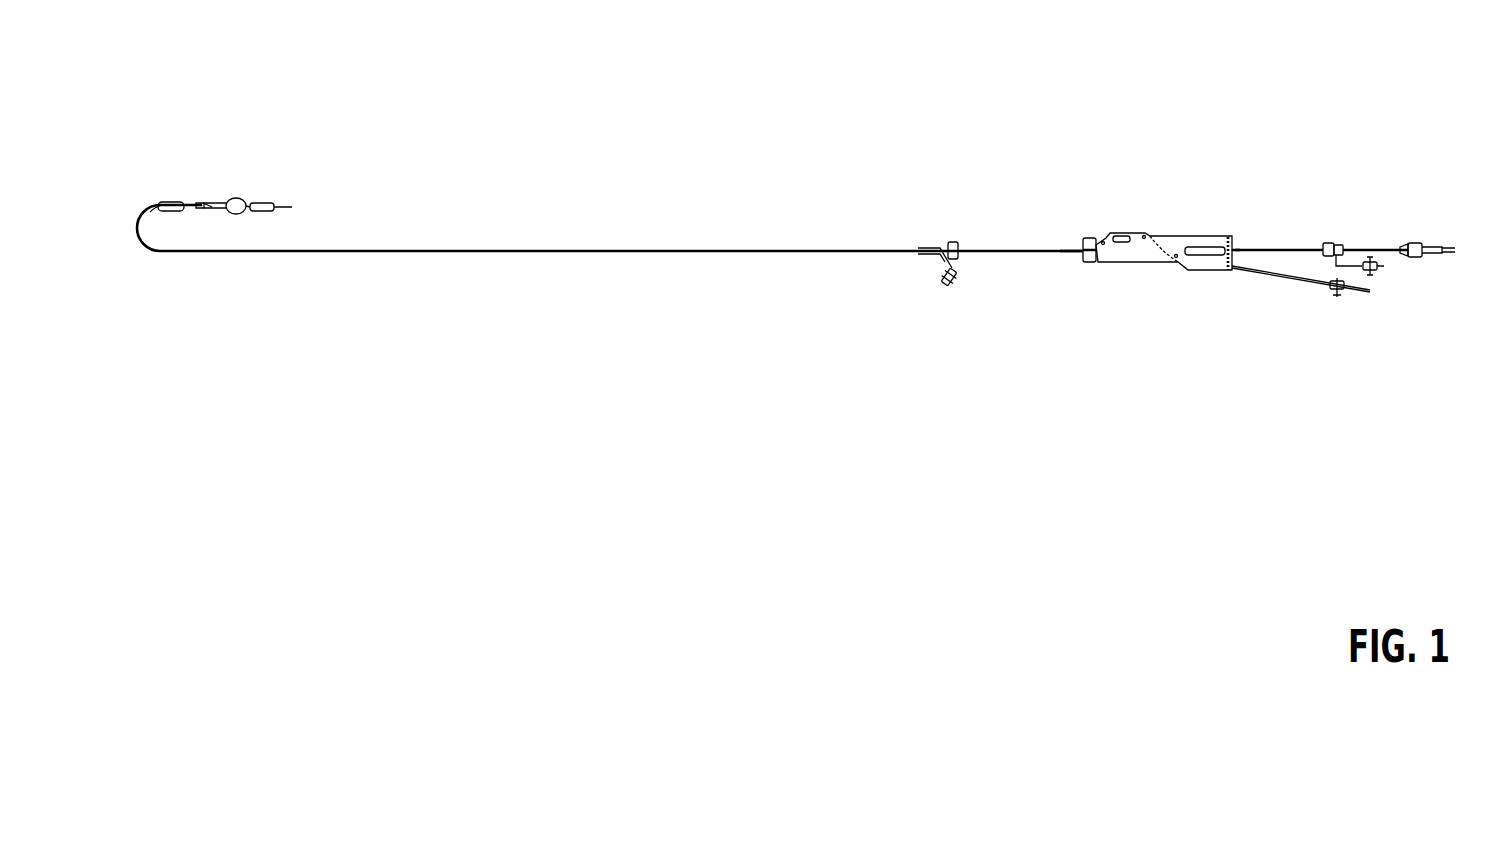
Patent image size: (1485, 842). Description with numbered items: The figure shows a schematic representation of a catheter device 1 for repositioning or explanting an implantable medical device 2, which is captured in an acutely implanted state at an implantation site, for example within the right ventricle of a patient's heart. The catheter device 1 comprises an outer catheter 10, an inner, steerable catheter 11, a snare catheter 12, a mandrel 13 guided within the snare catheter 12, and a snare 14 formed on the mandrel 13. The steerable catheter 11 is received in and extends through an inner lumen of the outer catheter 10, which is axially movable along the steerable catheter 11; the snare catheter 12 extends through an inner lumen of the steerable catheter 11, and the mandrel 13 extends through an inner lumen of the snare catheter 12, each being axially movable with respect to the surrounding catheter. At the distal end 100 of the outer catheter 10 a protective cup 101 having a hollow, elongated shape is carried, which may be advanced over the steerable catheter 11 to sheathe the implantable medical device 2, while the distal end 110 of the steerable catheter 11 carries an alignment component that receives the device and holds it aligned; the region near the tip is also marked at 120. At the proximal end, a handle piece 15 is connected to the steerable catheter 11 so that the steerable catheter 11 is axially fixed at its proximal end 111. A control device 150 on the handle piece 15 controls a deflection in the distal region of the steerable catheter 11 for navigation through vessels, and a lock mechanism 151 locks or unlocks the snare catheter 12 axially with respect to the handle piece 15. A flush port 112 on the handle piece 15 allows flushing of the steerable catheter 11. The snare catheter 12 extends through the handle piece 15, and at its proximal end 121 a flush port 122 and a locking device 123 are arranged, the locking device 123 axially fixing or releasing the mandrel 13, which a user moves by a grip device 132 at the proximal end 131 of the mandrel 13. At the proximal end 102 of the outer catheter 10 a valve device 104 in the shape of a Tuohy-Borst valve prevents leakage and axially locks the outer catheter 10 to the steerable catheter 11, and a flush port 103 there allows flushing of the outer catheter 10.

The catheter device 1 is at (840, 118).
The implantable medical device 2 is at (278, 208).
The outer catheter 10 is at (566, 253).
The steerable catheter 11 is at (197, 205).
The snare catheter 12 is at (213, 205).
The mandrel 13 is at (224, 203).
The snare 14 is at (248, 201).
The handle piece 15 is at (1169, 219).
The distal end of the outer catheter 100 is at (144, 214).
The protective cup 101 is at (167, 203).
The proximal end of the outer catheter 102 is at (916, 255).
The flush port 103 is at (950, 286).
The valve device 104 is at (953, 242).
The distal end of the steerable catheter 110 is at (205, 204).
The proximal end of the steerable catheter 111 is at (1073, 256).
The flush port 112 is at (1351, 294).
The tip junction 120 is at (217, 207).
The proximal end of the snare catheter 121 is at (1328, 243).
The flush port 122 is at (1386, 268).
The locking device 123 is at (1340, 252).
The proximal end of the mandrel 131 is at (1408, 243).
The grip device 132 is at (1426, 247).
The control device 150 is at (1089, 238).
The lock mechanism 151 is at (1122, 234).